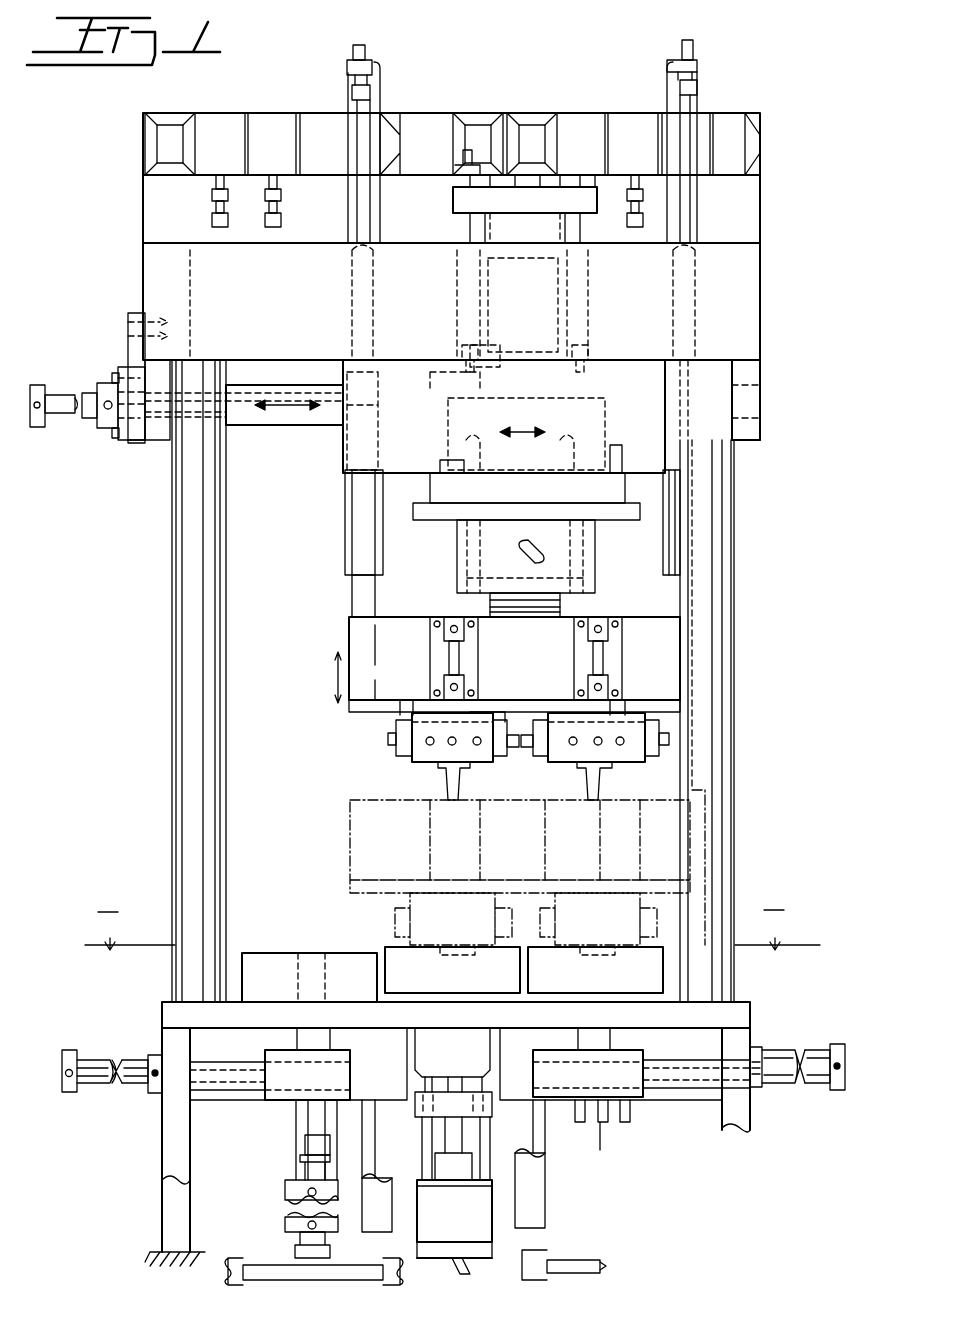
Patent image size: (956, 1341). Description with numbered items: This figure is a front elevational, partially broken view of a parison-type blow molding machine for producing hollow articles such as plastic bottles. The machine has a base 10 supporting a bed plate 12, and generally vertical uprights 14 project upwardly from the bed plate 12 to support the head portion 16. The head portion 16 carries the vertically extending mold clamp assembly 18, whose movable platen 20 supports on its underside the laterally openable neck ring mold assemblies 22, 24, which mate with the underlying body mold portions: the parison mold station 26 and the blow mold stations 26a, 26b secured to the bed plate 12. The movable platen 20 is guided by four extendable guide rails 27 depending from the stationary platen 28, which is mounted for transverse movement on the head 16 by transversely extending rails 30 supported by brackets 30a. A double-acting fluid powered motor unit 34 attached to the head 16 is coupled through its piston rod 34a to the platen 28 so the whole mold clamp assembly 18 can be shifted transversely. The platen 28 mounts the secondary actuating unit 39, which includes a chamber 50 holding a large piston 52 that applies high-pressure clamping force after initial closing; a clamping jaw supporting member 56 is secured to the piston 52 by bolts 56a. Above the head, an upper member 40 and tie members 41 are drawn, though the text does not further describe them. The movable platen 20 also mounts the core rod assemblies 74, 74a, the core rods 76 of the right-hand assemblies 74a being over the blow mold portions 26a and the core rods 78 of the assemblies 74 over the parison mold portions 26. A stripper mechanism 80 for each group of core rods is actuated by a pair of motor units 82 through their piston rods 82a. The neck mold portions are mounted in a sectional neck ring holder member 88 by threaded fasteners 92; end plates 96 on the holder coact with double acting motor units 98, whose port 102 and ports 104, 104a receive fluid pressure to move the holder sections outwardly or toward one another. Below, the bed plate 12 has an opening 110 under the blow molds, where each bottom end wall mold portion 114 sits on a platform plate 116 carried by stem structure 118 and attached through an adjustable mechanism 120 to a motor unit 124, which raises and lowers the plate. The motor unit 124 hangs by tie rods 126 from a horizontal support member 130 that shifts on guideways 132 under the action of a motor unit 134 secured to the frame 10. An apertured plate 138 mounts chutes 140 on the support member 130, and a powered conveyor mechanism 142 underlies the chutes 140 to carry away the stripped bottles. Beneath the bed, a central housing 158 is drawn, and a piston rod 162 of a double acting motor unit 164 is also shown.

The base 10 is at (777, 1014).
The bed plate 12 is at (162, 1013).
The uprights 14 is at (178, 640).
The head portion 16 is at (765, 264).
The mold clamp assembly 18 is at (340, 628).
The movable platen 20 is at (655, 630).
The neck ring mold assembly 22 is at (570, 795).
The neck ring mold assembly 24 is at (490, 770).
The parison mold station 26 is at (465, 966).
The blow mold station 26a is at (600, 966).
The blow mold station 26b is at (309, 977).
The extendable guide rails 27 is at (350, 583).
The stationary platen 28 is at (658, 447).
The transversely extending rails 30 is at (285, 427).
The brackets 30a is at (155, 445).
The double-acting fluid powered motor unit 34 is at (60, 395).
The piston rod 34a is at (290, 385).
The secondary actuating unit 39 is at (595, 383).
The upper mounting plate 40 is at (525, 181).
The tie members 41 is at (470, 225).
The chamber 50 is at (605, 430).
The piston 52 is at (445, 410).
The clamping jaw supporting member 56 is at (600, 540).
The bolts 56a is at (457, 593).
The core rod assemblies 74 is at (440, 780).
The core rod assemblies 74a is at (605, 780).
The core rods 76 is at (592, 800).
The core rods 78 is at (453, 800).
The stripper mechanism 80 is at (392, 740).
The double acting fluid powered motor units 82 is at (598, 646).
The piston rods 82a is at (575, 710).
The sectional neck ring holder member 88 is at (452, 703).
The threaded fasteners 92 is at (200, 282).
The end plates 96 is at (405, 715).
The double acting motor units 98 is at (500, 722).
The port 102 is at (452, 745).
The port 104 is at (432, 744).
The port 104a is at (480, 745).
The opening 110 is at (280, 1035).
The bottom end wall mold portion 114 is at (312, 1043).
The platform plate 116 is at (275, 1065).
The stem structure 118 is at (305, 1130).
The adjustable mechanism 120 is at (305, 1150).
The double acting motor unit 124 is at (295, 1226).
The tie rods 126 is at (306, 1170).
The support member 130 is at (292, 1100).
The guideways 132 is at (235, 1092).
The double acting motor unit 134 is at (112, 1075).
The apertured plate 138 is at (390, 1125).
The chutes 140 is at (378, 1222).
The powered conveyor mechanism 142 is at (267, 1266).
The central housing 158 is at (453, 1104).
The piston rod 162 is at (454, 1211).
The double acting motor unit 164 is at (454, 1241).